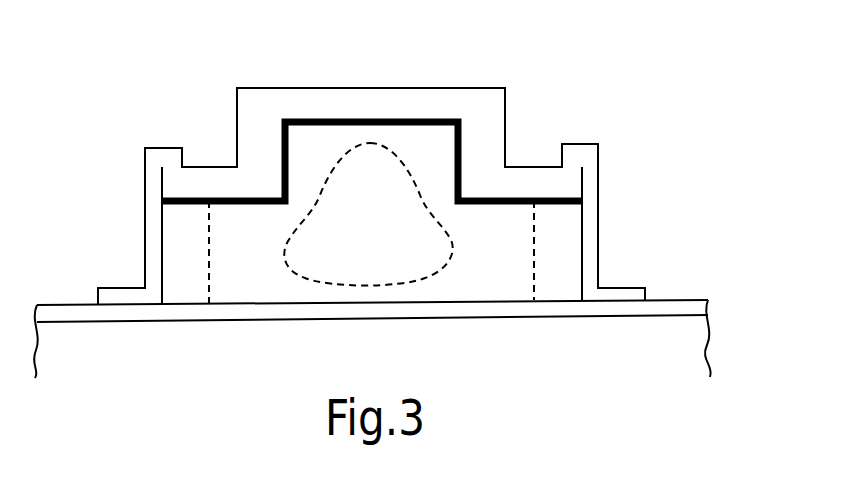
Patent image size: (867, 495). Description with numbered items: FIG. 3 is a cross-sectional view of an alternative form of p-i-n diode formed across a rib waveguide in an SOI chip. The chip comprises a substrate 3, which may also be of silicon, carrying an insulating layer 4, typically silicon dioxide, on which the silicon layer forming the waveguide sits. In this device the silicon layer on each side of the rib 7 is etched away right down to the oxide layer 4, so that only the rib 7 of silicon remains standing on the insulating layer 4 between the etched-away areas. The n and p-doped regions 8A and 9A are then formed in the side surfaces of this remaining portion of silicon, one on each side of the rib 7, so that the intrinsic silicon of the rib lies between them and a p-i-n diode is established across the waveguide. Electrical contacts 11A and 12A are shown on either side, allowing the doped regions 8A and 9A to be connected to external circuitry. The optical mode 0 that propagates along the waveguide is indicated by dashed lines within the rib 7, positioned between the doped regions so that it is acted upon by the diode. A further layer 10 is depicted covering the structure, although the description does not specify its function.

The substrate 3 is at (690, 348).
The insulating layer 4 is at (703, 305).
The rib 7 is at (310, 143).
The n-doped region 8A is at (177, 256).
The p-doped region 9A is at (565, 252).
The cap layer 10 is at (450, 98).
The electrical contact 11A is at (150, 213).
The electrical contact 12A is at (588, 208).
The optical mode 0 is at (423, 276).